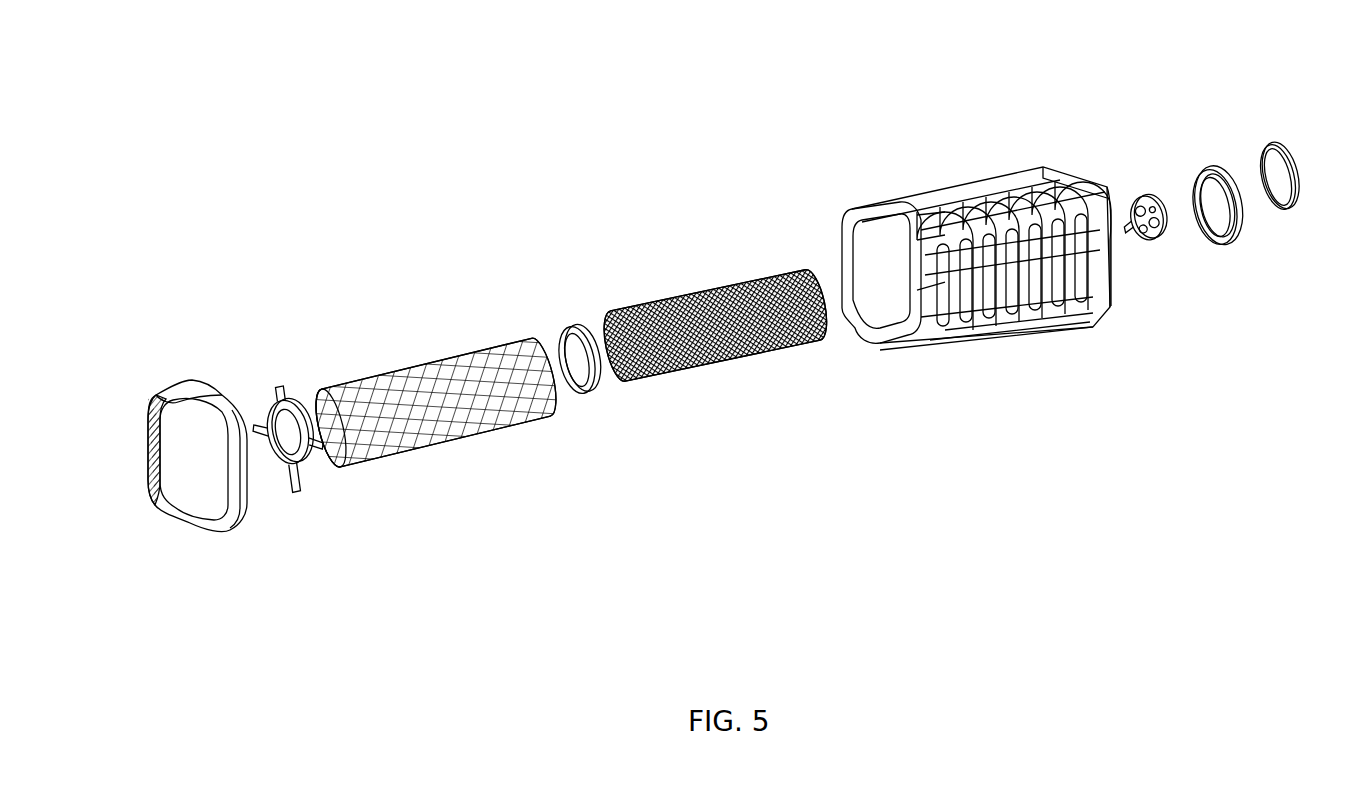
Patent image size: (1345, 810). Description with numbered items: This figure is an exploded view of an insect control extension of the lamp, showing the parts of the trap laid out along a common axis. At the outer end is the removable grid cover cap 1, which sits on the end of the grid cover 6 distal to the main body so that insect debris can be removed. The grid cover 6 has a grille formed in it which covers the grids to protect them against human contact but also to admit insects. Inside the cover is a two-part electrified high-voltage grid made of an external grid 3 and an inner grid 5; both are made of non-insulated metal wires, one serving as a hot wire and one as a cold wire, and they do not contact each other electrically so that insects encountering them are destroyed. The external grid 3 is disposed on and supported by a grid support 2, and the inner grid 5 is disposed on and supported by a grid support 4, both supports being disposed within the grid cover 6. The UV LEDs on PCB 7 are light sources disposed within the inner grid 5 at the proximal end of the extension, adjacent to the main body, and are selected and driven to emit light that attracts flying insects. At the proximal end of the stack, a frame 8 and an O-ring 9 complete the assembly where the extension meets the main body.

The grid cover cap 1 is at (190, 383).
The grid support 2 is at (293, 373).
The external grid 3 is at (480, 343).
The grid support 4 is at (570, 323).
The inner grid 5 is at (717, 288).
The grid cover 6 is at (902, 202).
The UV LEDs on PCB 7 is at (1143, 192).
The frame 8 is at (1193, 192).
The O-ring 9 is at (1270, 193).